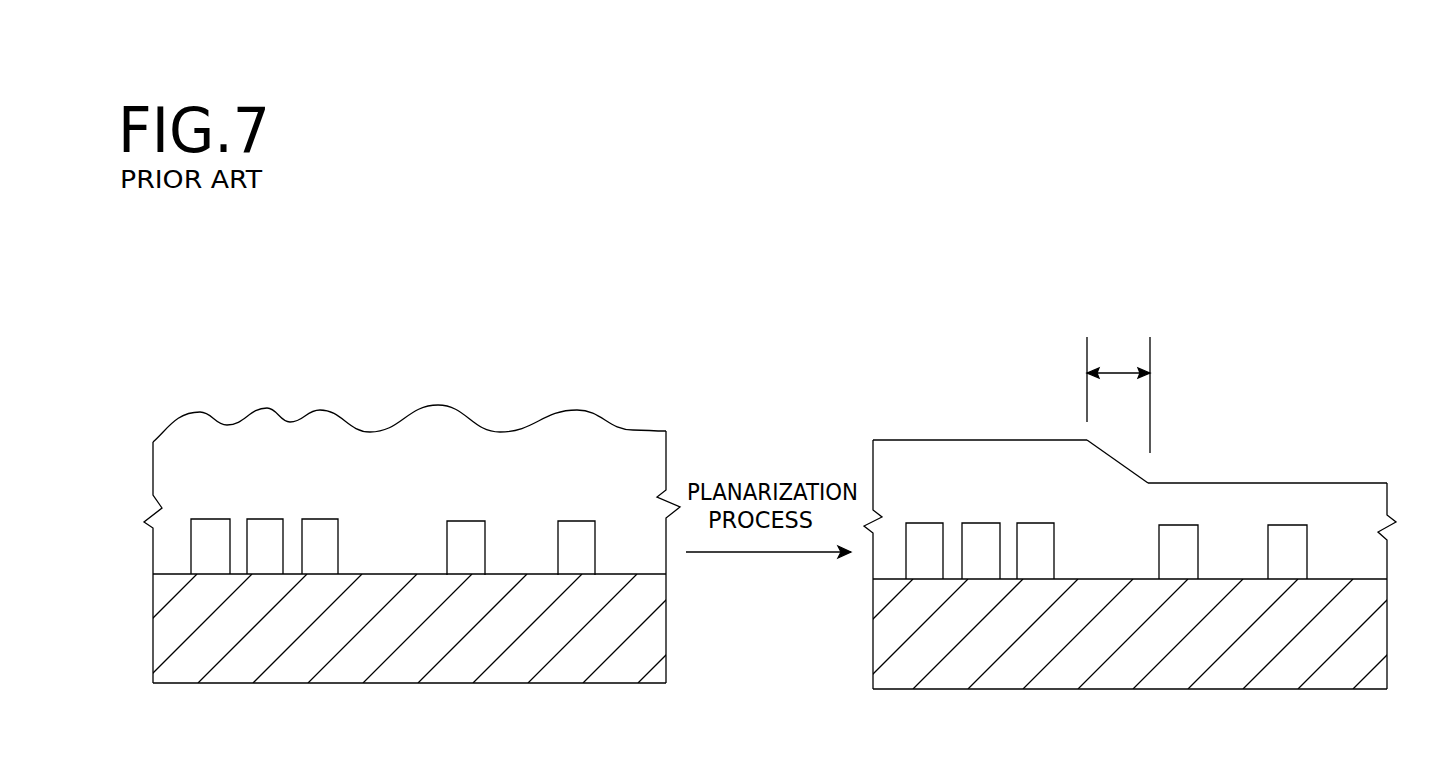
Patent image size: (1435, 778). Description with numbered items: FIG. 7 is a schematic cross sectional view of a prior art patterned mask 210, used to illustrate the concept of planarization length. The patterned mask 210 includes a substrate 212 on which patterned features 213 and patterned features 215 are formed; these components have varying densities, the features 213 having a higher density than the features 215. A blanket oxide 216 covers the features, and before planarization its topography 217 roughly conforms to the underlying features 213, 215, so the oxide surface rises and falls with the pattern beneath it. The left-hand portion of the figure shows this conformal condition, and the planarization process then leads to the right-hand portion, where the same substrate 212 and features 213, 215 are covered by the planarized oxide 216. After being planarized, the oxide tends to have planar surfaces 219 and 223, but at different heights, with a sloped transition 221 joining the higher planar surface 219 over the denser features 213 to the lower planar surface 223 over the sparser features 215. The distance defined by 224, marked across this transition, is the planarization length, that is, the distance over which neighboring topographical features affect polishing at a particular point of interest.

The patterned mask 210 is at (151, 379).
The substrate 212 is at (168, 637).
The patterned features 213 is at (322, 519).
The patterned features 215 is at (580, 521).
The blanket oxide 216 is at (178, 470).
The non-planar top surface of dielectric layer 217 is at (320, 410).
The planar surface 219 is at (915, 440).
The sloped step transition 221 is at (1137, 472).
The planar surface 223 is at (1237, 482).
The planarization length 224 is at (1113, 373).